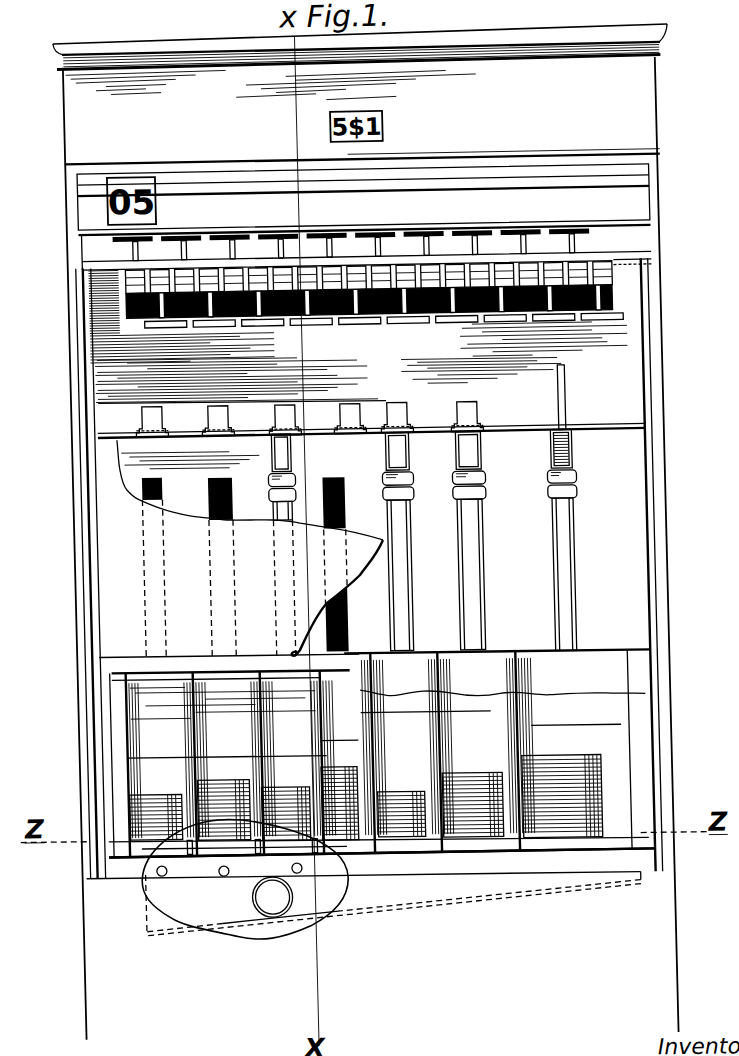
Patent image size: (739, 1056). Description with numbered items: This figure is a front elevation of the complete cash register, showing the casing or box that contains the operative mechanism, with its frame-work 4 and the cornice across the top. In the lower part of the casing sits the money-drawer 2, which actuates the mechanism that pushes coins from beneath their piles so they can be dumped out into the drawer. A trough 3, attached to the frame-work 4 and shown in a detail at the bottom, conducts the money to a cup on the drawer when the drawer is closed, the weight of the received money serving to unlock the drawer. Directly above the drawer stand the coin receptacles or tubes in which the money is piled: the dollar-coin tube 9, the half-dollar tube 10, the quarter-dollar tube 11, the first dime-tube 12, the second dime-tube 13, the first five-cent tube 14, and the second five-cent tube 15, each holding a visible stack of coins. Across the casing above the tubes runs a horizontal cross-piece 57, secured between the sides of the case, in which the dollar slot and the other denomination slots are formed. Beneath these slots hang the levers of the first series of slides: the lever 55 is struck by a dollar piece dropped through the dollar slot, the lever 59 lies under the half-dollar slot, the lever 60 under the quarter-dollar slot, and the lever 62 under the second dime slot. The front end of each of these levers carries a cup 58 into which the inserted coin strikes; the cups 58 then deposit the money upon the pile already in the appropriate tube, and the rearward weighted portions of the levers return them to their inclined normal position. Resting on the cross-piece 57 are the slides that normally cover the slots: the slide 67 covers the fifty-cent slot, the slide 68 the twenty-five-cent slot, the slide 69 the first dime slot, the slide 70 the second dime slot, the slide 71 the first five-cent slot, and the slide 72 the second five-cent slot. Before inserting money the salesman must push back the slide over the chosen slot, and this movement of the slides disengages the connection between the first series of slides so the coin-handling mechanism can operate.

The money-drawer 2 is at (396, 902).
The trough 3 is at (245, 879).
The frame-work 4 is at (100, 864).
The dollar-coin tube 9 is at (575, 750).
The half-dollar tube 10 is at (452, 686).
The quarter-dollar tube 11 is at (370, 686).
The first dime-tube 12 is at (346, 753).
The second dime-tube 13 is at (291, 763).
The first five-cent tube 14 is at (229, 763).
The second five-cent tube 15 is at (161, 764).
The lever 55 is at (573, 566).
The horizontal cross-piece 57 is at (612, 428).
The cups 58 is at (292, 460).
The lever 59 is at (482, 570).
The lever 60 is at (410, 556).
The lever 62 is at (273, 493).
The slide 67 is at (484, 411).
The slide 68 is at (414, 411).
The slide 69 is at (358, 412).
The slide 70 is at (300, 415).
The slide 71 is at (235, 416).
The slide 72 is at (170, 417).